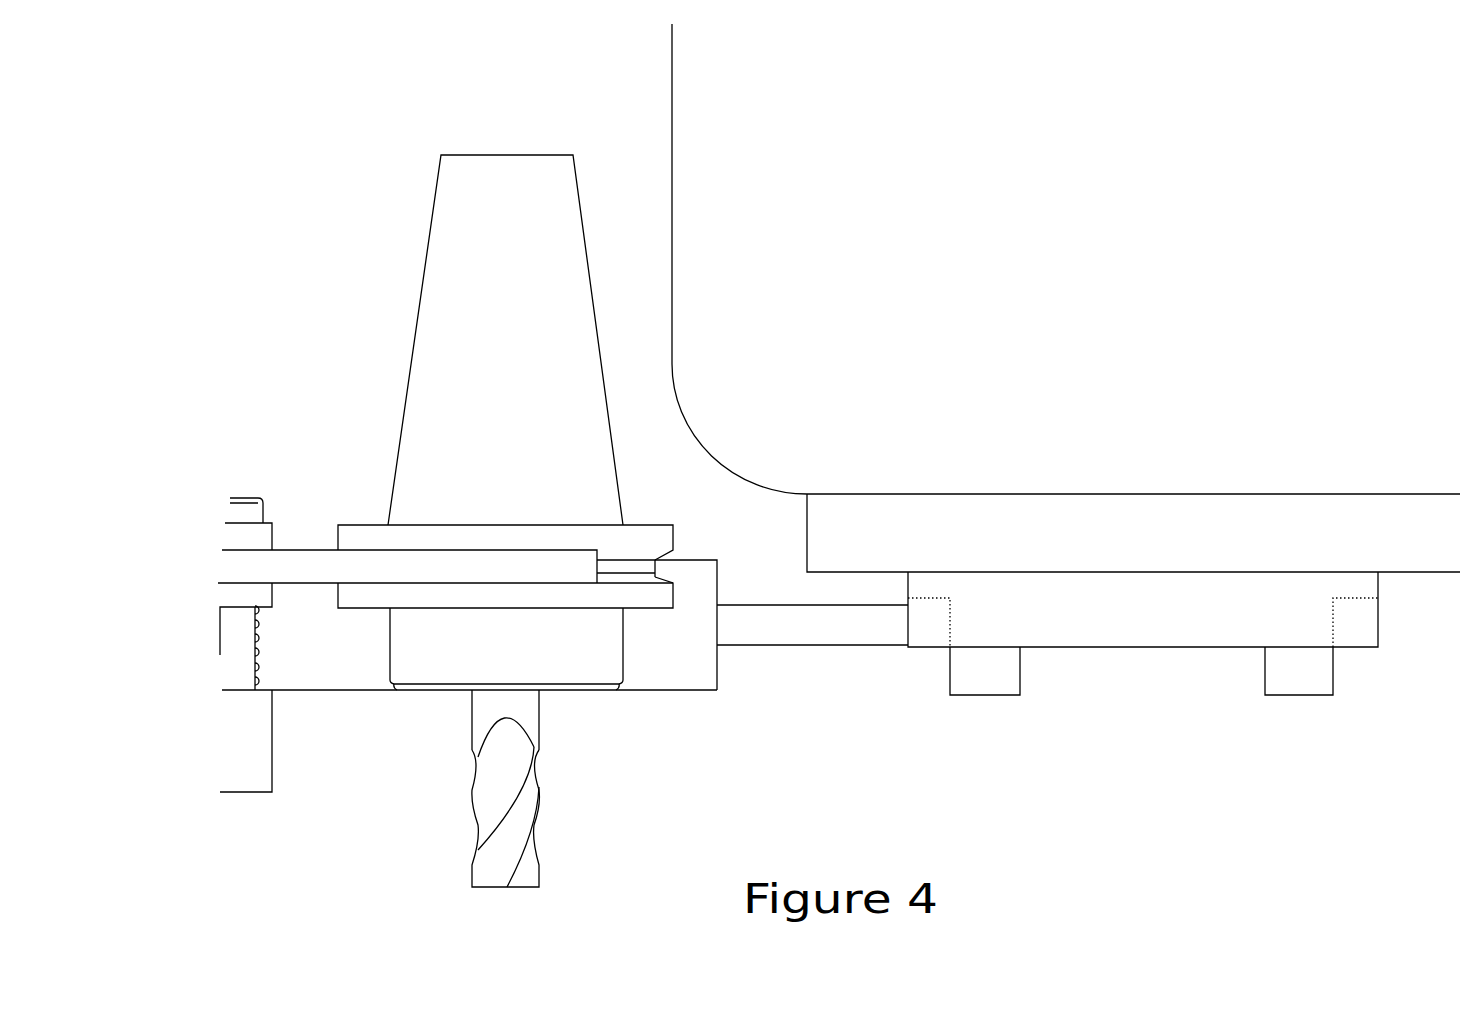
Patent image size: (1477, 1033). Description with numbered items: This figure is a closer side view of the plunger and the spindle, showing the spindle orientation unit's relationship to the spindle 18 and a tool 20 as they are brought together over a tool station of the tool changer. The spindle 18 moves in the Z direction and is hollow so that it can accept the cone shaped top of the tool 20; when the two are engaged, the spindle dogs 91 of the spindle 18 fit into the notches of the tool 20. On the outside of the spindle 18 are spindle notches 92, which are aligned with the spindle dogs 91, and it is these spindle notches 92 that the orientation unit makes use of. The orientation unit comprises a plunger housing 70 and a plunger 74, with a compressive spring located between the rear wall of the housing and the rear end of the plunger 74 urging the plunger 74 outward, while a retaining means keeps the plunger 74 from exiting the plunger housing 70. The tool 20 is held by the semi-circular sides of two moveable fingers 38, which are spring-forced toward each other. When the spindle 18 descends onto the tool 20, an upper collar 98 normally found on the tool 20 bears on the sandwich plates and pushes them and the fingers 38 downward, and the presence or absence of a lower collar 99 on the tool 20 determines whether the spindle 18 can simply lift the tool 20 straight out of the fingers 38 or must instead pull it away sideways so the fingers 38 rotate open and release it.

The spindle 18 is at (1016, 328).
The tool 20 is at (518, 385).
The moveable fingers 38 is at (316, 570).
The plunger housing 70 is at (707, 678).
The plunger 74 is at (835, 625).
The spindle dogs 91 is at (963, 683).
The spindle notches 92 is at (937, 627).
The upper collar 98 is at (662, 535).
The lower collar 99 is at (645, 598).